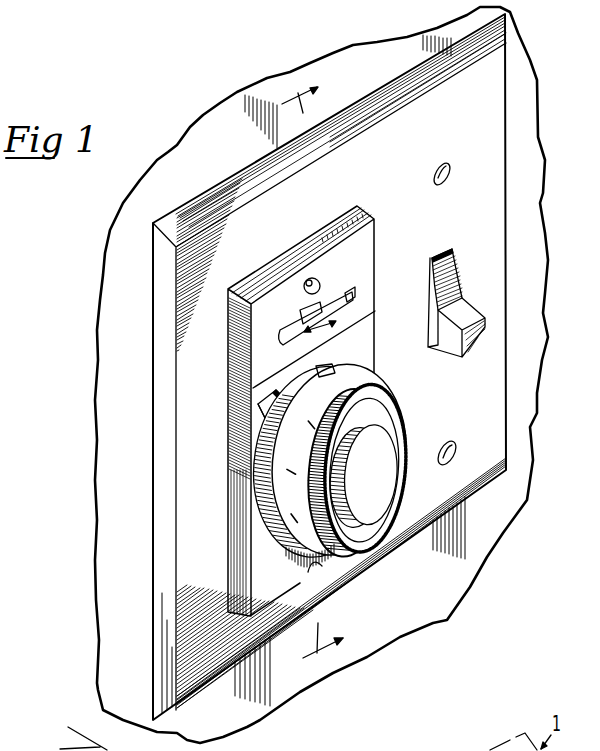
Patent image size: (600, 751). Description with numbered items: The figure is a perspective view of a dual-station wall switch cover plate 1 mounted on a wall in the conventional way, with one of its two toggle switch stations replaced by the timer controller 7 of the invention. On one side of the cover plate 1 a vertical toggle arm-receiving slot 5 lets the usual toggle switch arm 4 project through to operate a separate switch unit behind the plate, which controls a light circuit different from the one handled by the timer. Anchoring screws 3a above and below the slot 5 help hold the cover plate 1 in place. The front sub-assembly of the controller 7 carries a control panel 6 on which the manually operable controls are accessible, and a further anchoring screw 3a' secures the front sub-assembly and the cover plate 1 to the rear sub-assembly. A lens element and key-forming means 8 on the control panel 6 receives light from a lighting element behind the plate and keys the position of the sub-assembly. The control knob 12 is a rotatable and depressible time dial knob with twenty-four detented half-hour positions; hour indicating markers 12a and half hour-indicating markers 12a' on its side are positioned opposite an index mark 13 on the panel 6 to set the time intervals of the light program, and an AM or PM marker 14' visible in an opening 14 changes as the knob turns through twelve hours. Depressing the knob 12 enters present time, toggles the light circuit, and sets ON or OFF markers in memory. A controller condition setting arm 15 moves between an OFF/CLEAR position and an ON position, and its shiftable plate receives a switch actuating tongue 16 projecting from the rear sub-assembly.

The cover plate 1 is at (230, 175).
The anchoring screws 3a is at (460, 295).
The anchoring screw 3a' is at (331, 583).
The toggle switch arm 4 is at (466, 314).
The toggle arm-receiving slot 5 is at (447, 247).
The control panel 6 is at (363, 250).
The controller 7 is at (256, 273).
The lens element and key-forming means 8 is at (316, 281).
The control knob 12 is at (388, 458).
The hour indicating markers 12a is at (351, 467).
The half hour-indicating markers 12a' is at (306, 461).
The index mark 13 is at (323, 367).
The opening 14 is at (242, 430).
The AM or PM marker 14' is at (229, 410).
The controller condition setting arm 15 is at (308, 307).
The switch actuating tongue 16 is at (353, 283).